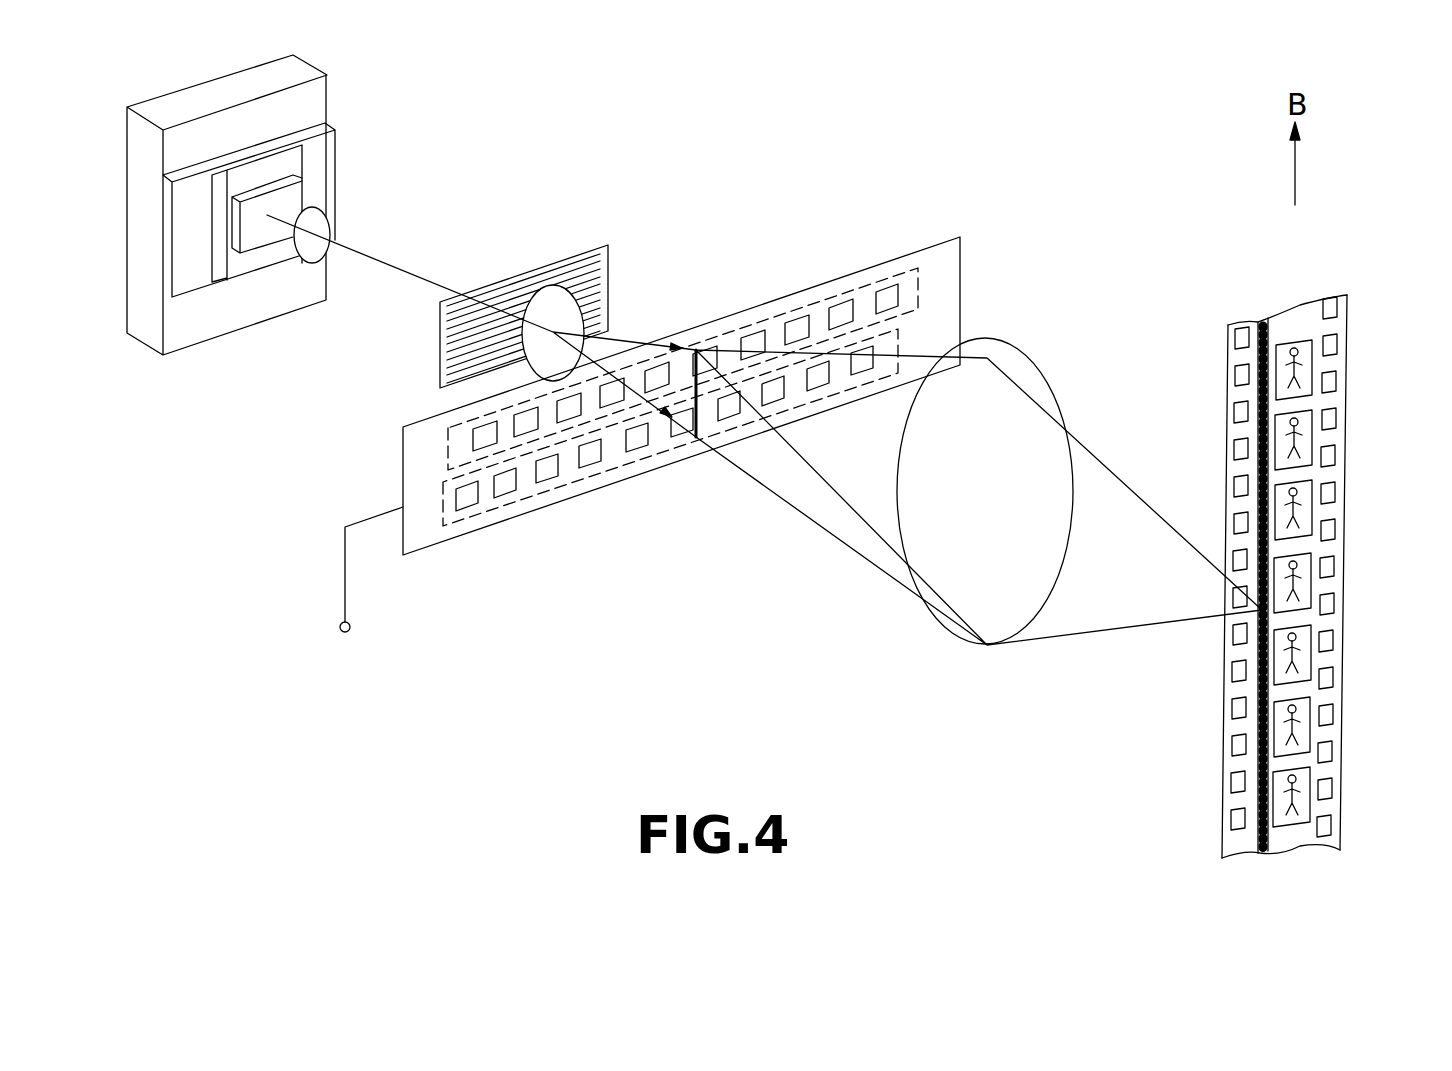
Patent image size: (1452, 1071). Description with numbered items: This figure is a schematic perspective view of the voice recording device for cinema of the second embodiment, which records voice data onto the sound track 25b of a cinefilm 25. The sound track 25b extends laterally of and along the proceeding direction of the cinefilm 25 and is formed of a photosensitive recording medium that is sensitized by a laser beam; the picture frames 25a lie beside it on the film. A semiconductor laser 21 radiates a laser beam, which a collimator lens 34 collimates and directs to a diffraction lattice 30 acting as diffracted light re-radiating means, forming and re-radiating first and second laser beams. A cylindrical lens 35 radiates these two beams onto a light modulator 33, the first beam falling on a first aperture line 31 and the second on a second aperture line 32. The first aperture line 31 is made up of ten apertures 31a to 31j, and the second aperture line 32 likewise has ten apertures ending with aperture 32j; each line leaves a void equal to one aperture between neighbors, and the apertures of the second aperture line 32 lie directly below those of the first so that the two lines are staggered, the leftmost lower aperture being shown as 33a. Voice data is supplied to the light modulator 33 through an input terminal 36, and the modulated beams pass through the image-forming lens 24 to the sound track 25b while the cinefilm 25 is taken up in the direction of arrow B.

The semiconductor laser 21 is at (293, 163).
The collimator lens 34 is at (313, 222).
The diffraction lattice 30 is at (540, 279).
The cylindrical lens 35 is at (567, 312).
The light modulator 33 is at (943, 283).
The first aperture line 31 is at (762, 320).
The aperture 31a is at (480, 438).
The aperture 31j is at (884, 300).
The second aperture line 32 is at (617, 470).
The aperture 32j is at (862, 370).
The first cell of second row 33a is at (467, 503).
The input terminal 36 is at (345, 632).
The image-forming lens 24 is at (1012, 367).
The cinefilm 25 is at (1228, 365).
The film frame 25a is at (1302, 343).
The sound track 25b is at (1257, 323).